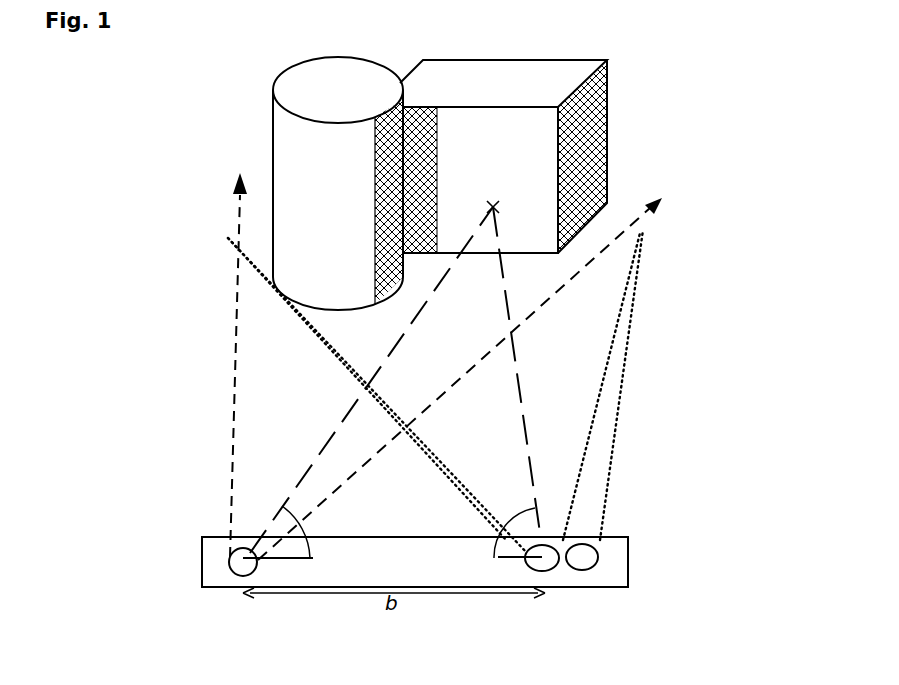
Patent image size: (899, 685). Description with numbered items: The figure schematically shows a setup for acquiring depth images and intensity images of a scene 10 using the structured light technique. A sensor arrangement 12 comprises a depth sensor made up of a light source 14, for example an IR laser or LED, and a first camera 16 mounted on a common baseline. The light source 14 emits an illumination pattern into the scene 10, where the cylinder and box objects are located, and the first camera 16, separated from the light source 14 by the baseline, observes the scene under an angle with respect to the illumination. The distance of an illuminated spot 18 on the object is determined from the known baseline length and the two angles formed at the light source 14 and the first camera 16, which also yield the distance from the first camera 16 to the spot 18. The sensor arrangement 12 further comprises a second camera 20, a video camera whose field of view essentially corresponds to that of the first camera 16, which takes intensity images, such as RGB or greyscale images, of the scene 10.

The scene 10 is at (658, 327).
The sensor arrangement 12 is at (620, 538).
The light source 14 is at (233, 578).
The first camera 16 is at (527, 568).
The illuminated spot 18 is at (492, 206).
The second camera 20 is at (583, 571).